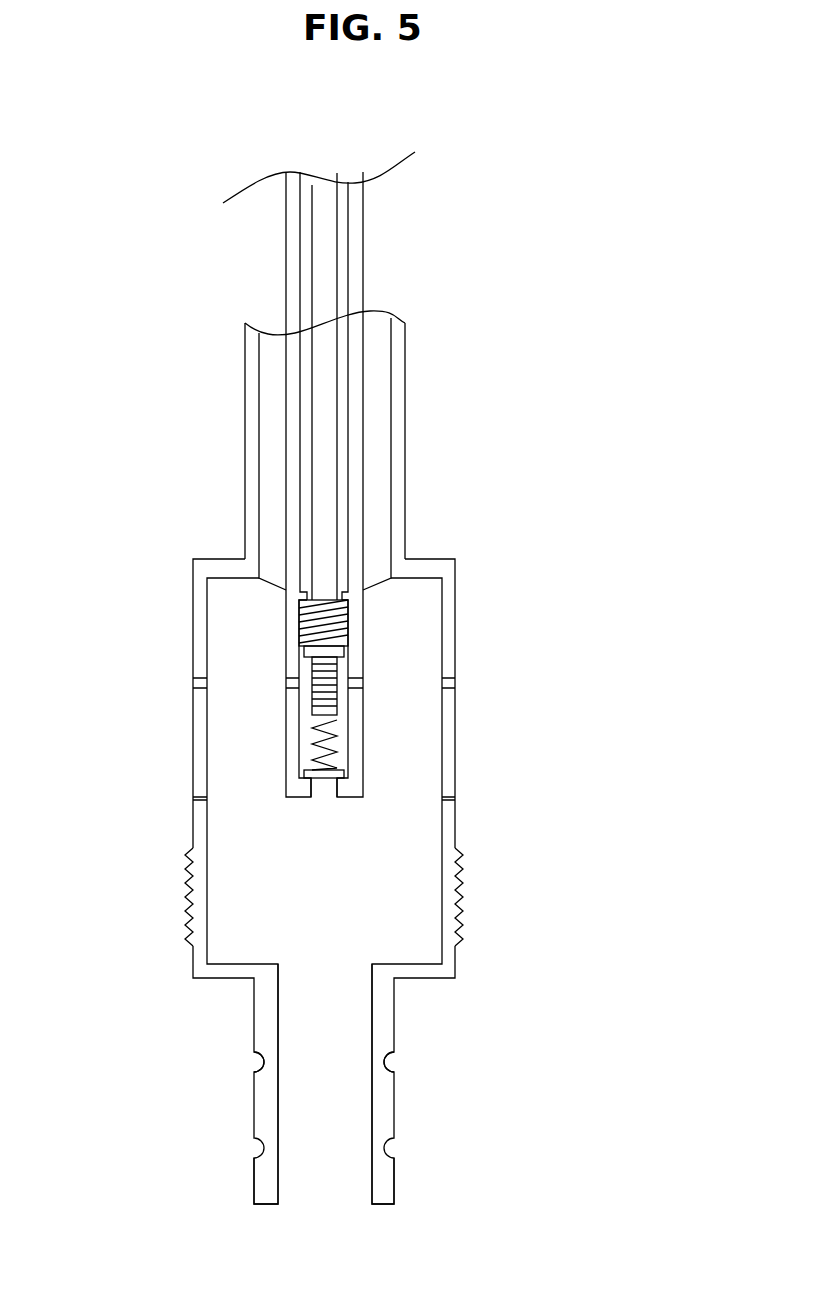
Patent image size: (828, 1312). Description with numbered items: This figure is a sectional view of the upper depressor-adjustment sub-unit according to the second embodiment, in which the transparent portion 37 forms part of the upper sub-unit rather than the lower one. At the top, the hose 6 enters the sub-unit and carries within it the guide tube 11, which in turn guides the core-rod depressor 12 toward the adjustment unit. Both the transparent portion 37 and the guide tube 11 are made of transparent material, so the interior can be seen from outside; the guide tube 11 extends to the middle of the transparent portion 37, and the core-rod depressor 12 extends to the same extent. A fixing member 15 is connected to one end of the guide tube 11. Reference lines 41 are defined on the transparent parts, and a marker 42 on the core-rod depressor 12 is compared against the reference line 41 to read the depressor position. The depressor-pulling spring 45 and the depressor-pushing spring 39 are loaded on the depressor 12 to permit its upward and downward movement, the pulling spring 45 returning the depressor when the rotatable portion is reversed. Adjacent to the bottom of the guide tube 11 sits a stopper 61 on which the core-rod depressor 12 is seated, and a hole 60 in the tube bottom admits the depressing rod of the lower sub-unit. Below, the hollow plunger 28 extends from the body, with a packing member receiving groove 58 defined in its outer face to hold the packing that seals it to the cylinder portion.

The core-rod depressor 12 is at (325, 228).
The guide tube 11 is at (355, 277).
The hose 6 is at (427, 450).
The transparent portion 37 is at (500, 710).
The reference line 41 is at (377, 682).
The stopper 61 is at (298, 788).
The hole 60 is at (325, 788).
The fixing member 15 is at (268, 590).
The depressor-pulling spring 45 is at (295, 640).
The marker 42 is at (305, 702).
The depressor-pushing spring 39 is at (308, 738).
The packing member receiving groove 58 is at (425, 1060).
The plunger 28 is at (425, 1117).